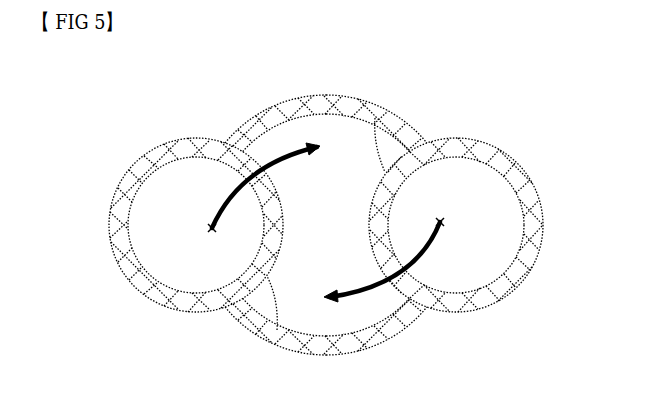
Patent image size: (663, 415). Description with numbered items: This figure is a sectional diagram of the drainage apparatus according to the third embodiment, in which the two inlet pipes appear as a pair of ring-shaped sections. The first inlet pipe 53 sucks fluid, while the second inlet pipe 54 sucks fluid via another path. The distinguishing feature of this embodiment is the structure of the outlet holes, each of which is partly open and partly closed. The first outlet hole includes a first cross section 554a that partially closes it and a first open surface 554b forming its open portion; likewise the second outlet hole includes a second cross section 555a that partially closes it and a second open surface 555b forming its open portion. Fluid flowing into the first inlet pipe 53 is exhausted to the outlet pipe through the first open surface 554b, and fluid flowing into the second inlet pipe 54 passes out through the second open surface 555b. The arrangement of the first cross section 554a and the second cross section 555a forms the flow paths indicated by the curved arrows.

The first inlet pipe 53 is at (158, 172).
The second inlet pipe 54 is at (509, 157).
The first cross section 554a is at (277, 330).
The first open surface 554b is at (246, 151).
The second cross section 555a is at (375, 118).
The second open surface 555b is at (404, 298).